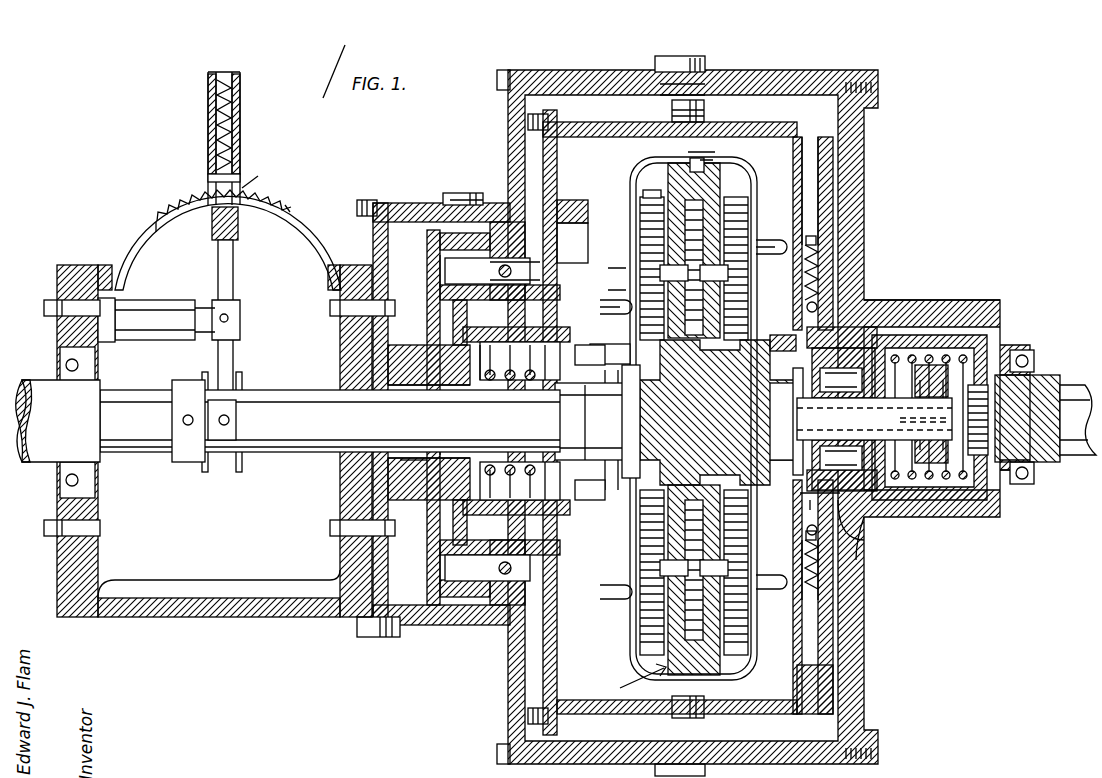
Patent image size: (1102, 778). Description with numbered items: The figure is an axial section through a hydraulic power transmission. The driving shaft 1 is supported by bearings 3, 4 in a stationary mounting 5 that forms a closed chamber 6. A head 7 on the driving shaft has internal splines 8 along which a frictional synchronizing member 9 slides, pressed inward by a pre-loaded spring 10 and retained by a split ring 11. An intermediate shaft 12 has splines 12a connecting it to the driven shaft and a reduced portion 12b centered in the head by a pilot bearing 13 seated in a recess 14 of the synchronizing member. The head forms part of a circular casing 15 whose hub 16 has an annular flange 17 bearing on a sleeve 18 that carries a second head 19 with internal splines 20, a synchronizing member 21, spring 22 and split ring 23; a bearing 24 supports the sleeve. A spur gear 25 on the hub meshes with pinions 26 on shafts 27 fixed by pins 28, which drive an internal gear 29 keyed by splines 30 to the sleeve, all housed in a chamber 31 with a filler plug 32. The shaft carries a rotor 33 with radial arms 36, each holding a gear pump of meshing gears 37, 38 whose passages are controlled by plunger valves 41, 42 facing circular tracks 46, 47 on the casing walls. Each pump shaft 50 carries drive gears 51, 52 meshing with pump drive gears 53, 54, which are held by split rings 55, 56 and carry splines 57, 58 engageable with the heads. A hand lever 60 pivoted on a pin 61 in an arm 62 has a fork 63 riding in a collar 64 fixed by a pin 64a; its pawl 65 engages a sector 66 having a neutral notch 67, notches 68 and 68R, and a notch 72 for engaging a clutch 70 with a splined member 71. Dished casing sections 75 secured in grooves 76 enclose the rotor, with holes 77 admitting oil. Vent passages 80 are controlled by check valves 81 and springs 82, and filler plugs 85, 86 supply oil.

The driving shaft 1 is at (1068, 390).
The bearing 3 is at (1034, 360).
The bearing 4 is at (57, 352).
The stationary mounting 5 is at (222, 605).
The closed chamber 6 is at (760, 92).
The head 7 is at (955, 338).
The internal splines 8 is at (920, 330).
The frictional synchronizing member 9 is at (868, 487).
The pre-loaded spring 10 is at (963, 478).
The split ring 11 is at (865, 480).
The shaft 12 is at (300, 455).
The splines 12a is at (140, 452).
The reduced-diameter portion 12b is at (874, 419).
The pilot bearing 13 is at (862, 340).
The recess 14 is at (840, 365).
The circular casing 15 is at (618, 125).
The hub 16 is at (535, 308).
The annular flange 17 is at (460, 335).
The sleeve 18 is at (415, 388).
The head 19 is at (560, 340).
The internal splines 20 is at (530, 380).
The frictional synchronizing member 21 is at (540, 470).
The pre-loaded spring 22 is at (492, 470).
The split ring 23 is at (612, 490).
The bearing 24 is at (429, 412).
The spur gear 25 is at (440, 520).
The pinions 26 is at (428, 262).
The pinion shafts 27 is at (445, 266).
The pins 28 is at (530, 275).
The internal gear 29 is at (428, 212).
The key or splines 30 is at (440, 388).
The gear chamber 31 is at (405, 622).
The filler plug 32 is at (460, 195).
The rotor 33 is at (628, 677).
The radial webs or arms 36 is at (715, 416).
The pump gear 37 is at (728, 272).
The pump gear 38 is at (720, 200).
The valve 41 is at (818, 242).
The valve 42 is at (640, 300).
The circular track 46 is at (588, 212).
The circular track 47 is at (812, 236).
The pump gear shaft 50 is at (745, 270).
The drive gear 51 is at (706, 220).
The drive gear 52 is at (645, 192).
The pump drive gear 53 is at (779, 421).
The pump drive gear 54 is at (597, 421).
The split retaining ring 55 is at (793, 422).
The split retaining ring 56 is at (590, 430).
The splines 57 is at (775, 312).
The splines 58 is at (585, 365).
The hand lever 60 is at (238, 162).
The pin 61 is at (230, 314).
The arm 62 is at (138, 302).
The fork or roller 63 is at (242, 395).
The collar 64 is at (238, 462).
The pin 64a is at (186, 382).
The spring-pressed pawl 65 is at (215, 138).
The sector 66 is at (132, 228).
The notch 67 is at (248, 190).
The notches 68 is at (185, 200).
The notches 68R is at (268, 200).
The clutch 70 is at (925, 470).
The splined member 71 is at (1025, 512).
The notch 72 is at (158, 216).
The casing sections 75 is at (630, 236).
The circular grooves 76 is at (700, 152).
The holes 77 is at (640, 258).
The vent passages 80 is at (812, 135).
The check valves 81 is at (806, 523).
The springs 82 is at (820, 262).
The filler plug 85 is at (700, 64).
The filler plug 86 is at (705, 112).